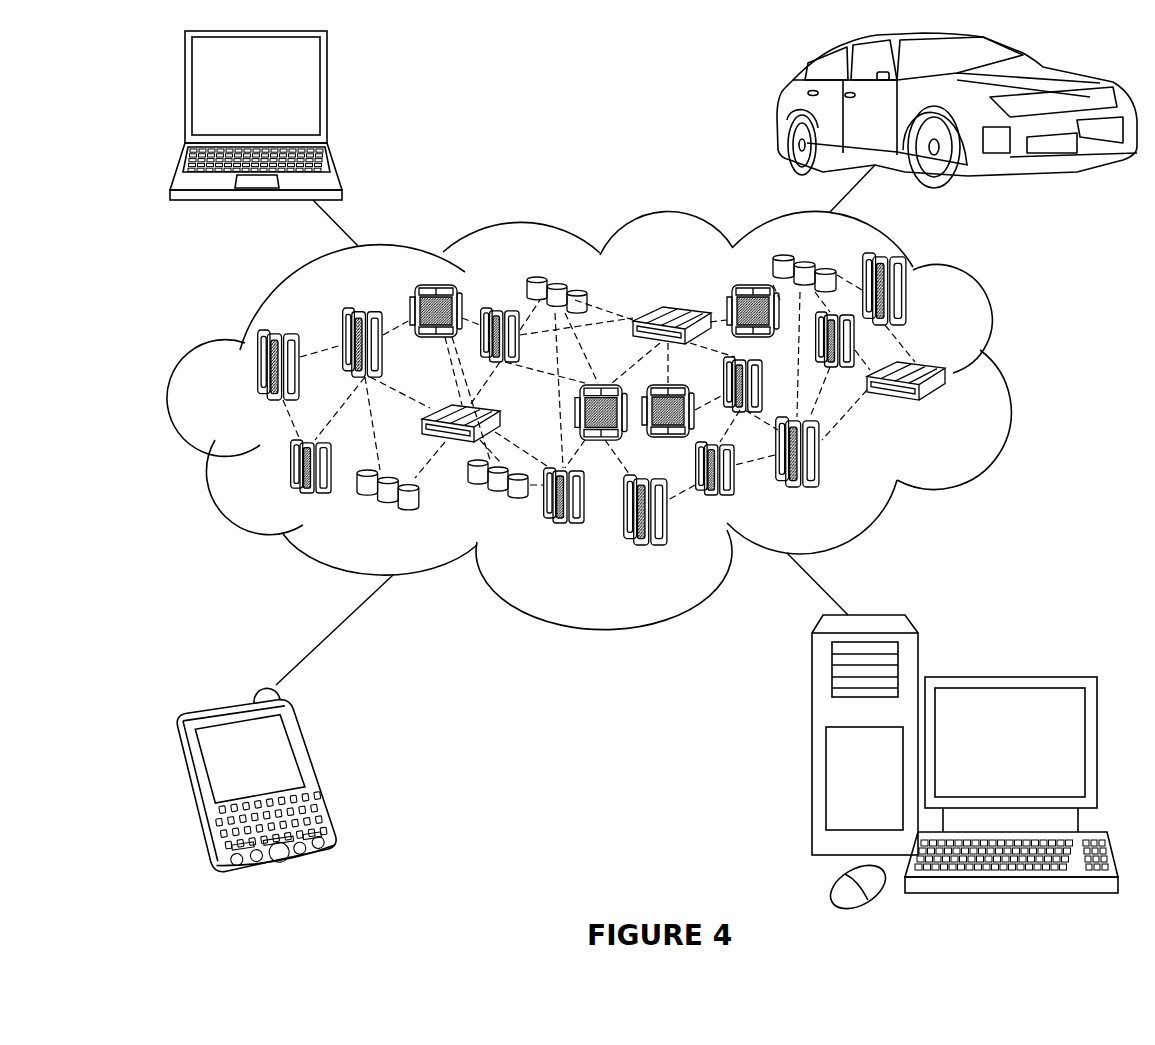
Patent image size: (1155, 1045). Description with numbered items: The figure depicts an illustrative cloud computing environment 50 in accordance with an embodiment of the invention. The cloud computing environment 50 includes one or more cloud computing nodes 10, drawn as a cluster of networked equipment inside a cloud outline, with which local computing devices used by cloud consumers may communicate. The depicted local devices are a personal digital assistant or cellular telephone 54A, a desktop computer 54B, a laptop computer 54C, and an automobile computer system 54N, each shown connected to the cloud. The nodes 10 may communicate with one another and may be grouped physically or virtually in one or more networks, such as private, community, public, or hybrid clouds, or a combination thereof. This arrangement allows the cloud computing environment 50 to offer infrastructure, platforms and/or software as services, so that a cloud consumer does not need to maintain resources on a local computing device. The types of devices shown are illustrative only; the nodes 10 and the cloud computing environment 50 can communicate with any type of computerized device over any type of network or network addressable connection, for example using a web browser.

The laptop computer 54C is at (327, 93).
The automobile computer system 54N is at (780, 110).
The personal digital assistant (PDA) or cellular telephone 54A is at (318, 773).
The desktop computer 54B is at (1007, 677).
The cloud computing environment 50 is at (1007, 377).
The cloud computing node 10 is at (946, 410).